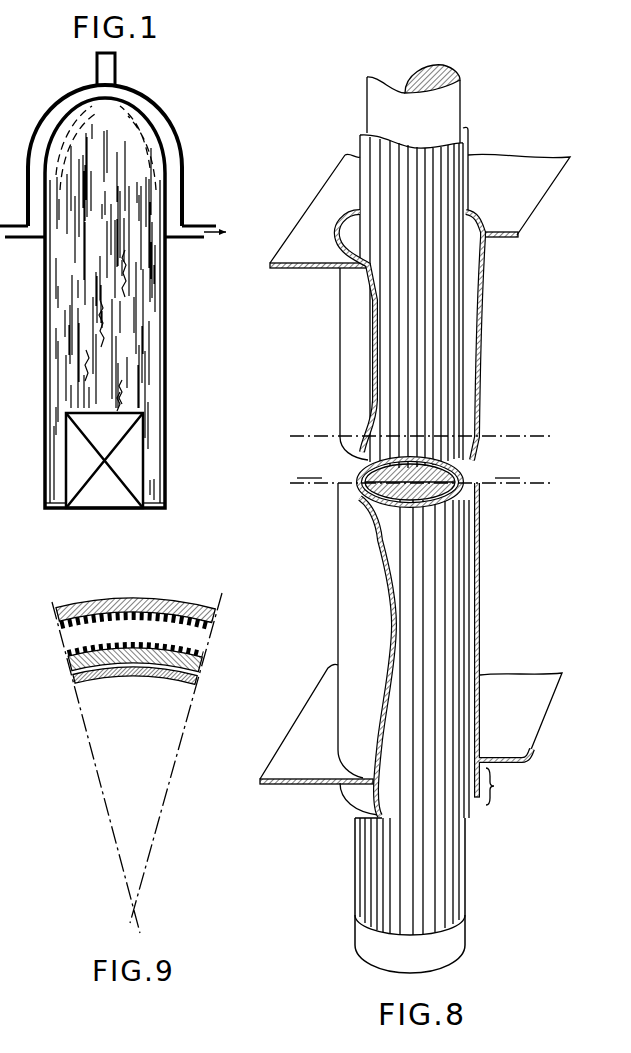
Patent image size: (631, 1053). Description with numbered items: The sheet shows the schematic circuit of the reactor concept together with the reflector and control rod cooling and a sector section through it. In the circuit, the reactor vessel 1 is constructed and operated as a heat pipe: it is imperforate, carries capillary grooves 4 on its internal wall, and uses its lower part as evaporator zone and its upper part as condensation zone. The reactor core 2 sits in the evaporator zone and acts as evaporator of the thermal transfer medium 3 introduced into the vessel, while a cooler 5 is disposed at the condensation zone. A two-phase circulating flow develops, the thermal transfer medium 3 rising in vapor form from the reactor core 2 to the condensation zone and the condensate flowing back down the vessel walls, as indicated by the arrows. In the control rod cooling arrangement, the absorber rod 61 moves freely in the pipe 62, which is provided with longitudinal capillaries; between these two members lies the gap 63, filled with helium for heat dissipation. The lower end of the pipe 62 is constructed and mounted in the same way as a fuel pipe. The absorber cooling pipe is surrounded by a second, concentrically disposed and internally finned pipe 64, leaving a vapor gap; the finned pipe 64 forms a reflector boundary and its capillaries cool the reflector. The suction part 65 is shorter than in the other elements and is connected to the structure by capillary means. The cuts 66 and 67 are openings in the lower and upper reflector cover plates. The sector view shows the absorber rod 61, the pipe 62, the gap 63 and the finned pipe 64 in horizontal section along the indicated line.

In FIG. 1, the reactor vessel 1 is at (166, 333).
In FIG. 1, the reactor core 2 is at (139, 460).
In FIG. 1, the thermal transfer medium 3 is at (123, 405).
In FIG. 1, the capillary grooves 4 is at (53, 322).
In FIG. 1, the cooler 5 is at (171, 150).
In FIG. 8, the absorber rod 61 is at (449, 101).
In FIG. 9, the absorber rod 61 is at (178, 728).
In FIG. 8, the pipe 62 is at (468, 147).
In FIG. 9, the pipe 62 is at (67, 658).
In FIG. 8, the gap 63 is at (463, 122).
In FIG. 9, the gap 63 is at (203, 667).
In FIG. 8, the internally finned pipe 64 is at (480, 347).
In FIG. 9, the internally finned pipe 64 is at (217, 613).
In FIG. 8, the suction part 65 is at (497, 788).
In FIG. 8, the cut in reflector cover plate 66 is at (508, 237).
In FIG. 8, the cut in reflector cover plate 67 is at (515, 786).